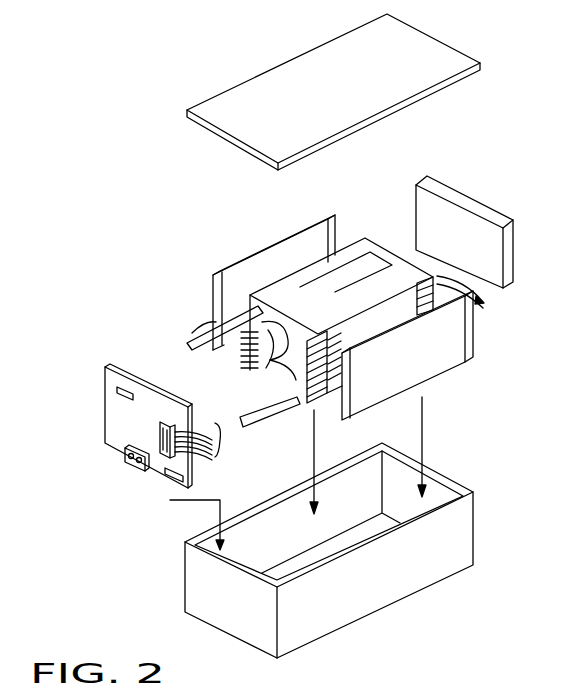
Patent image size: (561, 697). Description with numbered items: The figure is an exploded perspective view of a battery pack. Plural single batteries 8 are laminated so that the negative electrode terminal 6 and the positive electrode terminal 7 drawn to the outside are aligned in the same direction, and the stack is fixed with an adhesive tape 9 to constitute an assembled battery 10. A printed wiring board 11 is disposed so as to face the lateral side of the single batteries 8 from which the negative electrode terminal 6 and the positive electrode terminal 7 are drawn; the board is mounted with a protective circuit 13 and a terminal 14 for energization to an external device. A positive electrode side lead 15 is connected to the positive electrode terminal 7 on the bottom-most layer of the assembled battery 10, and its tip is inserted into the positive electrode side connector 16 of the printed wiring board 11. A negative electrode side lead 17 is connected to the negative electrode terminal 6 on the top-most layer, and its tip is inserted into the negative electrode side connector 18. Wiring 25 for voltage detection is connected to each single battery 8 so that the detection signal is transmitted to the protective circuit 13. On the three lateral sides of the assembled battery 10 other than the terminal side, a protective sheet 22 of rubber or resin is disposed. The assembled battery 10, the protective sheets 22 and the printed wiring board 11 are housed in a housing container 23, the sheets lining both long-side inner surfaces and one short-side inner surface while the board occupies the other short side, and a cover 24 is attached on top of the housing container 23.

The negative electrode terminal 6 is at (212, 308).
The positive electrode terminal 7 is at (310, 330).
The single battery 8 is at (470, 298).
The adhesive tape 9 is at (382, 285).
The assembled battery 10 is at (303, 268).
The printed wiring board 11 is at (125, 368).
The protective circuit 13 is at (167, 422).
The terminal for energization to an external device 14 is at (138, 469).
The positive electrode side lead 15 is at (266, 423).
The positive electrode side connector 16 is at (192, 475).
The negative electrode side lead 17 is at (192, 333).
The negative electrode side connector 18 is at (133, 388).
The protective sheet 22 is at (255, 260).
The housing container 23 is at (467, 530).
The cover 24 is at (445, 53).
The wiring for voltage detection 25 is at (234, 370).